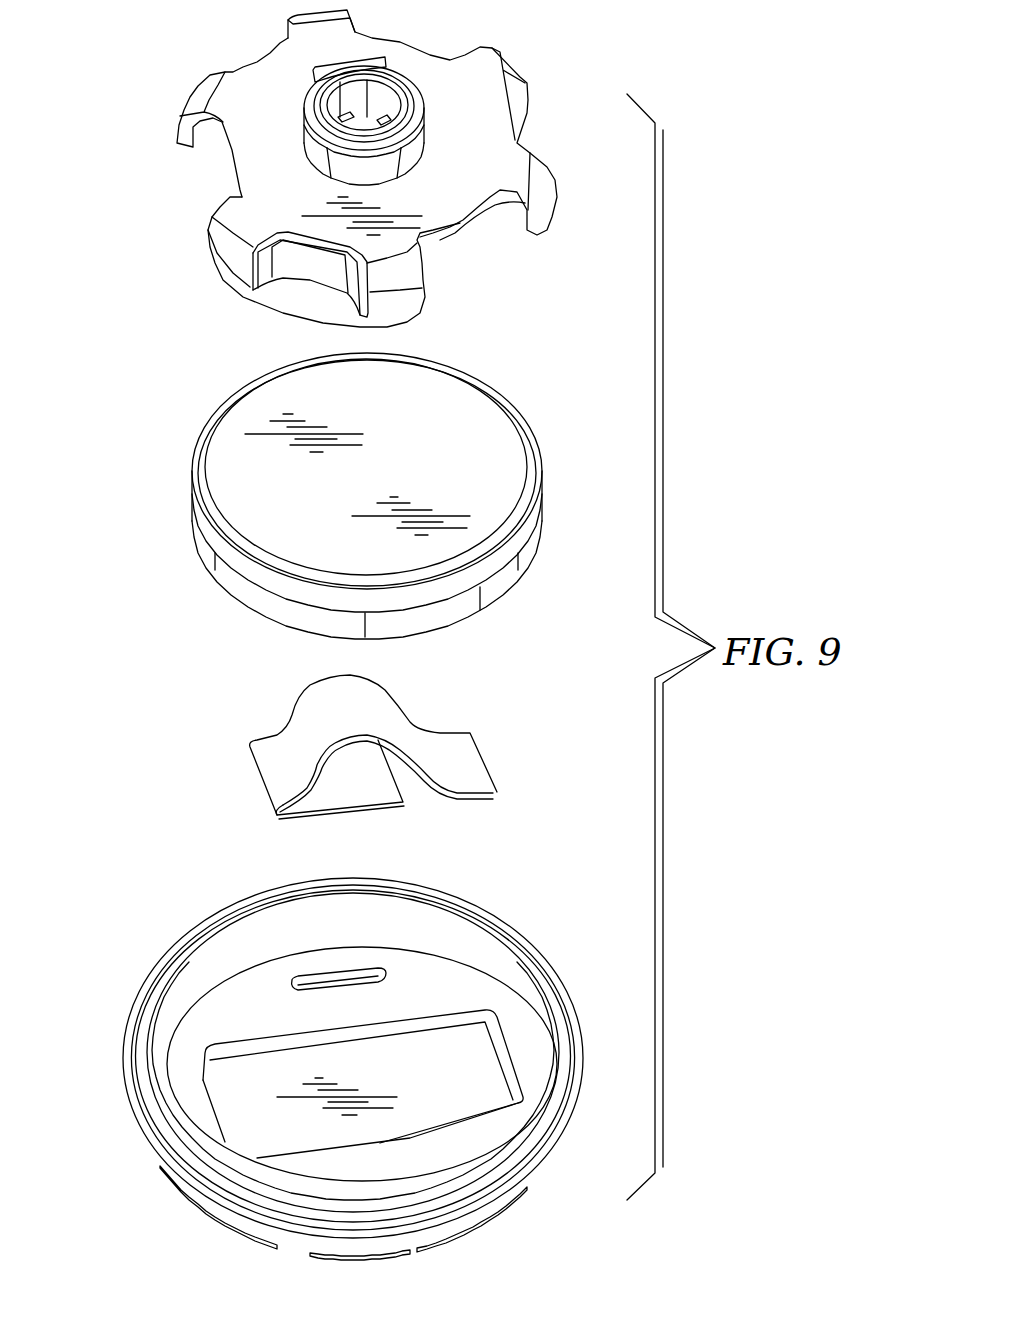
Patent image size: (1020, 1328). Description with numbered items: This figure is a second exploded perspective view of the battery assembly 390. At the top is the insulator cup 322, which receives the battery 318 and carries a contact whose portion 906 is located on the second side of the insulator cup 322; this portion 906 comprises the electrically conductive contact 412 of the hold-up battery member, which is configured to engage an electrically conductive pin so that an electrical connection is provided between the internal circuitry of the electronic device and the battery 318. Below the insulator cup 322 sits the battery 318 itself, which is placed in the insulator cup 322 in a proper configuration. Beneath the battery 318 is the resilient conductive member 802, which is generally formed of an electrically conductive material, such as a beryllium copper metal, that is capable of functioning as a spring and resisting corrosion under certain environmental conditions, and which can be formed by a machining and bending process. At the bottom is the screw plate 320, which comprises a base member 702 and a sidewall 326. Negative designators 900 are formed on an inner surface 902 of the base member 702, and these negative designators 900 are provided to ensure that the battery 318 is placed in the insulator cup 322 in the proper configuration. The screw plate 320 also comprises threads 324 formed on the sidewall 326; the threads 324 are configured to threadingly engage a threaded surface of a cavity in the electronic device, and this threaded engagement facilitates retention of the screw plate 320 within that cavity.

The battery assembly 390 is at (190, 45).
The insulator cup 322 is at (186, 247).
The portion of contact 906 is at (363, 115).
The electrically conductive contact 412 is at (378, 113).
The battery 318 is at (200, 468).
The resilient conductive member 802 is at (243, 704).
The screw plate 320 is at (110, 1035).
The negative designators 900 is at (292, 983).
The inner surface 902 is at (437, 988).
The sidewall 326 is at (136, 1130).
The threads 324 is at (175, 1168).
The base member 702 is at (543, 1180).